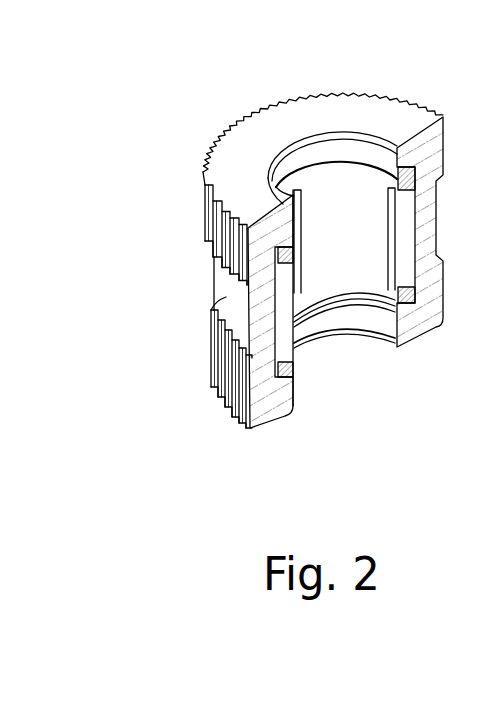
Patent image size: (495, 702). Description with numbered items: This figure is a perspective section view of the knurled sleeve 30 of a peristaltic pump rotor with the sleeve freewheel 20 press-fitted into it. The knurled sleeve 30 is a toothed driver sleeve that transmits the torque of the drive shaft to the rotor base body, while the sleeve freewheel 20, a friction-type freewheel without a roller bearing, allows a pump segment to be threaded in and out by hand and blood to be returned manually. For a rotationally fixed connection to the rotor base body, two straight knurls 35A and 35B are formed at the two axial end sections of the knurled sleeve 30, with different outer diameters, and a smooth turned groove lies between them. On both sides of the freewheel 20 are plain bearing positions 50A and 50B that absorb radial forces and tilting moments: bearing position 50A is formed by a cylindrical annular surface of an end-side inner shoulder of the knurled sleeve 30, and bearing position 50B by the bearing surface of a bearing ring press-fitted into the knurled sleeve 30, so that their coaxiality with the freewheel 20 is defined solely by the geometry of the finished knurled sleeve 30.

The sleeve freewheel 20 is at (360, 268).
The knurled sleeve 30 is at (263, 322).
The straight knurl 35A is at (202, 222).
The straight knurl 35B is at (232, 370).
The plain bearing position 50A is at (330, 150).
The plain bearing position 50B is at (328, 328).